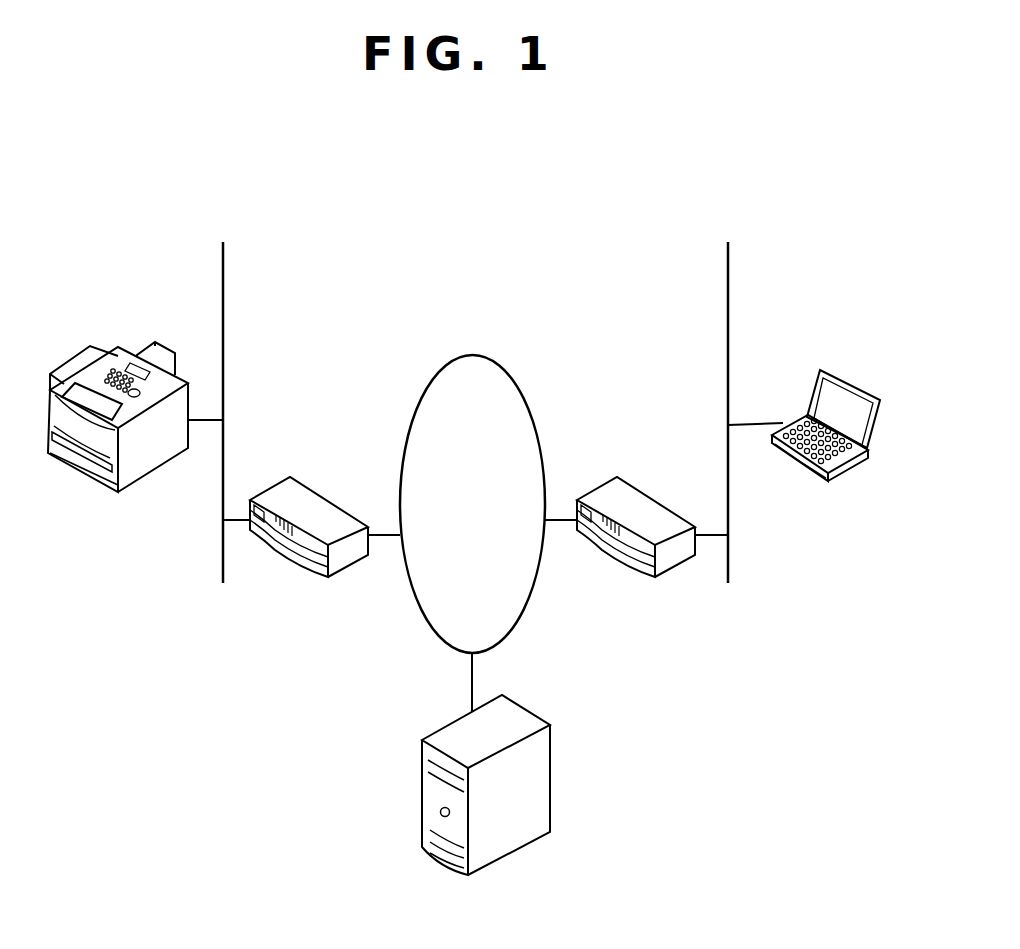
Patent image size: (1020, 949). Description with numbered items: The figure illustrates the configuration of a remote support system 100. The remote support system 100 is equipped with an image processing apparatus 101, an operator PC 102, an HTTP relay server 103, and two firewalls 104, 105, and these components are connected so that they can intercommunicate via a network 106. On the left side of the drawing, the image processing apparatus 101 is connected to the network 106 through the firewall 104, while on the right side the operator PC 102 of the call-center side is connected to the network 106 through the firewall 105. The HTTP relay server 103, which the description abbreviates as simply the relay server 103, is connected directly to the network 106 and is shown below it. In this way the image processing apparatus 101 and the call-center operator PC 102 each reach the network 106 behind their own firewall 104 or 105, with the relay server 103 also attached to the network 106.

The remote support system 100 is at (692, 150).
The image processing apparatus 101 is at (148, 474).
The operator PC 102 is at (832, 371).
The HTTP relay server 103 is at (552, 775).
The firewall 104 is at (317, 492).
The firewall 105 is at (646, 492).
The network 106 is at (508, 371).